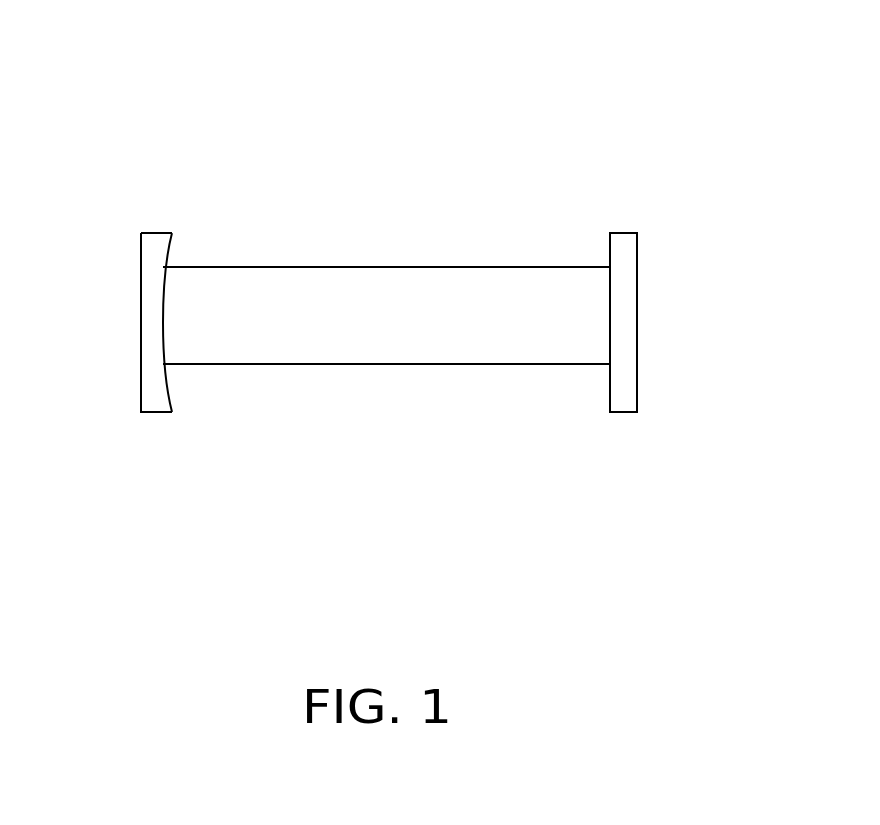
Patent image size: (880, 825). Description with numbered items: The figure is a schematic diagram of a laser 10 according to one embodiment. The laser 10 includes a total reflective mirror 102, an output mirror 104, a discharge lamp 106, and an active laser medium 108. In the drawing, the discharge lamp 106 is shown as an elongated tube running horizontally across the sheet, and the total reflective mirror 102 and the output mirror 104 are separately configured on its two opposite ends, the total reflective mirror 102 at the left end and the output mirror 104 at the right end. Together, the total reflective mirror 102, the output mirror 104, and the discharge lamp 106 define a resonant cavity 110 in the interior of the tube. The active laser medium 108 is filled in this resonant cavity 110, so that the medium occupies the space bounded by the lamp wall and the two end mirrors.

The laser 10 is at (393, 128).
The total reflective mirror 102 is at (147, 233).
The output mirror 104 is at (625, 233).
The discharge lamp 106 is at (359, 267).
The active laser medium 108 is at (464, 290).
The resonant cavity 110 is at (403, 332).